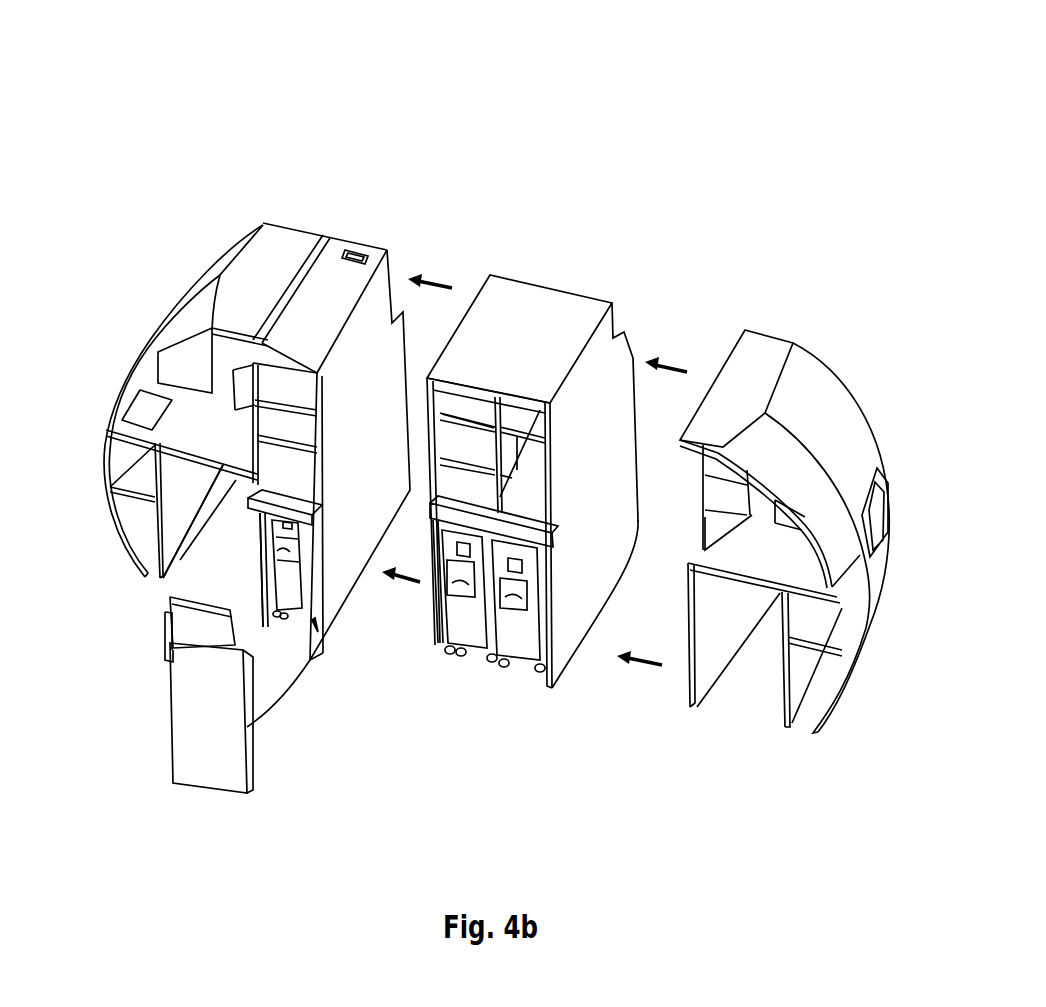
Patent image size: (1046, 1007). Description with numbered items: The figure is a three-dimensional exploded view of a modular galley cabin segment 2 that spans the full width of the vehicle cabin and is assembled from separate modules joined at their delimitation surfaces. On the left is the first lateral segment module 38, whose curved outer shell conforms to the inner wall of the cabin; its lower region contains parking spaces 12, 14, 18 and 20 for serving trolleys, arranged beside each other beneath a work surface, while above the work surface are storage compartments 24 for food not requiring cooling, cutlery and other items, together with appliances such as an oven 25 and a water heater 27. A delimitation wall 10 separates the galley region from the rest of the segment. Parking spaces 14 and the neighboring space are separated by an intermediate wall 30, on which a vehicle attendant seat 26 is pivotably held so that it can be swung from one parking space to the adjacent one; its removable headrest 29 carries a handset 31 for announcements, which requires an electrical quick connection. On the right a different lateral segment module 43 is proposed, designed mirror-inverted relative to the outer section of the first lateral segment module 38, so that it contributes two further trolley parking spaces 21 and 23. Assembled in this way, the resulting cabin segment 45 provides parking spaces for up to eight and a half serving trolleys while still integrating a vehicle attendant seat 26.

The cabin segment 2 is at (657, 126).
The delimitation wall 10 is at (607, 487).
The parking space 12 is at (514, 674).
The parking space 14 is at (466, 672).
The parking space 18 is at (249, 534).
The parking space 20 is at (216, 534).
The parking space 21 is at (726, 692).
The parking space 23 is at (778, 704).
The storage compartment 24 is at (457, 403).
The oven 25 is at (472, 478).
The vehicle attendant seat 26 is at (227, 750).
The water heater 27 is at (182, 368).
The headrest 29 is at (202, 638).
The intermediate wall 30 is at (308, 556).
The handset 31 is at (170, 622).
The first lateral segment module 38 is at (234, 218).
The lateral segment module 43 is at (827, 333).
The cabin segment 45 is at (530, 258).